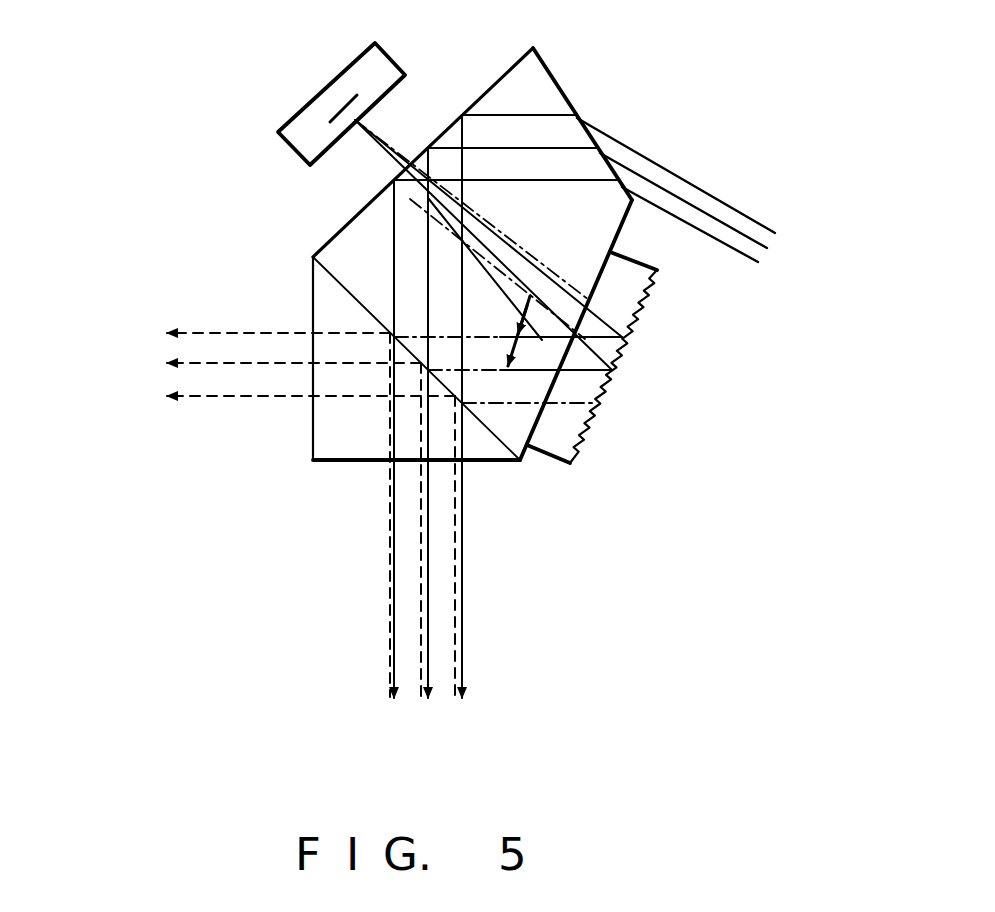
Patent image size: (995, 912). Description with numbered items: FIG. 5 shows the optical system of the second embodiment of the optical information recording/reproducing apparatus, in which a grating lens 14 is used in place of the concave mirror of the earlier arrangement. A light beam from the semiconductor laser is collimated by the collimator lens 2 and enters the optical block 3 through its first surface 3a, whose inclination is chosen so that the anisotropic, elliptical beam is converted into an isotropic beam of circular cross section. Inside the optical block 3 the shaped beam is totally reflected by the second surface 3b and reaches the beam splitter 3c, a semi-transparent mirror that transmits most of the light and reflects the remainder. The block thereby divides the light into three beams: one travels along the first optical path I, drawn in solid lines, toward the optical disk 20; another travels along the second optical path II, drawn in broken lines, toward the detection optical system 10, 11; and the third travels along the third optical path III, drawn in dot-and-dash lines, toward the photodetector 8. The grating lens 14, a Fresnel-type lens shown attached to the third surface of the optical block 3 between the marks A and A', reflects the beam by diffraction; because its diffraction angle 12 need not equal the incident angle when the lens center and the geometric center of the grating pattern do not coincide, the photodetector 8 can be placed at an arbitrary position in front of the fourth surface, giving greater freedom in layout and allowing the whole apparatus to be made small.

The optical block 3 is at (480, 259).
The first surface 3a is at (566, 95).
The second surface 3b is at (497, 80).
The beam splitter 3c is at (503, 456).
The photodetector 8 is at (345, 72).
The collimator lens 2 is at (725, 221).
The detection optical system 10 is at (239, 361).
The detection optical system 11 is at (500, 345).
The diffraction angle 12 is at (520, 305).
The grating lens 14 is at (640, 307).
The optical disk 20 is at (423, 747).
The first optical path I is at (463, 607).
The second optical path II is at (278, 333).
The third optical path III is at (518, 244).
The grating end point A is at (668, 273).
The grating end point A' is at (573, 484).